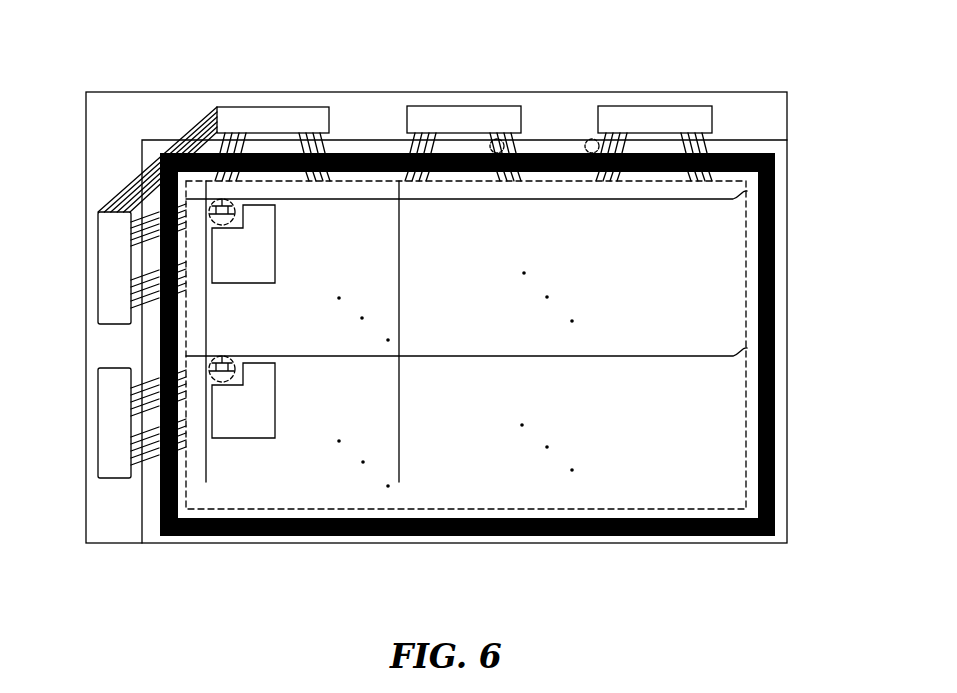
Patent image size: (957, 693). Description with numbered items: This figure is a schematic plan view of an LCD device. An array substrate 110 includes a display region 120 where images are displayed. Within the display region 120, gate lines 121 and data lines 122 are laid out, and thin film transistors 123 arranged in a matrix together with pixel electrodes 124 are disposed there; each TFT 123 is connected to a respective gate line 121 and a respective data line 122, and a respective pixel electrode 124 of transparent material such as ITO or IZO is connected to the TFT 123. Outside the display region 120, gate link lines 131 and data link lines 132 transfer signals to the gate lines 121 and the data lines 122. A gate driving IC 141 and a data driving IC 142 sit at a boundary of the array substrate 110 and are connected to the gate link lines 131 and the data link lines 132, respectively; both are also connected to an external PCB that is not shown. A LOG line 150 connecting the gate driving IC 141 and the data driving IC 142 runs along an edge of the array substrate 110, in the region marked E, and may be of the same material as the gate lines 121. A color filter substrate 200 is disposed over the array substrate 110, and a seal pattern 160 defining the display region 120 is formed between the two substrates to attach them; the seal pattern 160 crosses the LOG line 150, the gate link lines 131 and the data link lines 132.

The array substrate 110 is at (787, 112).
The color filter substrate 200 is at (352, 143).
The LOG line 150 is at (122, 183).
The edge region E is at (152, 155).
The data driving IC 142 is at (272, 118).
The data link lines 132 is at (588, 140).
The gate driving IC 141 is at (100, 430).
The gate link lines 131 is at (150, 386).
The gate lines 121 is at (818, 341).
The data lines 122 is at (468, 565).
The thin film transistor 123 is at (250, 368).
The pixel electrode 124 is at (240, 428).
The display region 120 is at (748, 381).
The seal pattern 160 is at (776, 265).